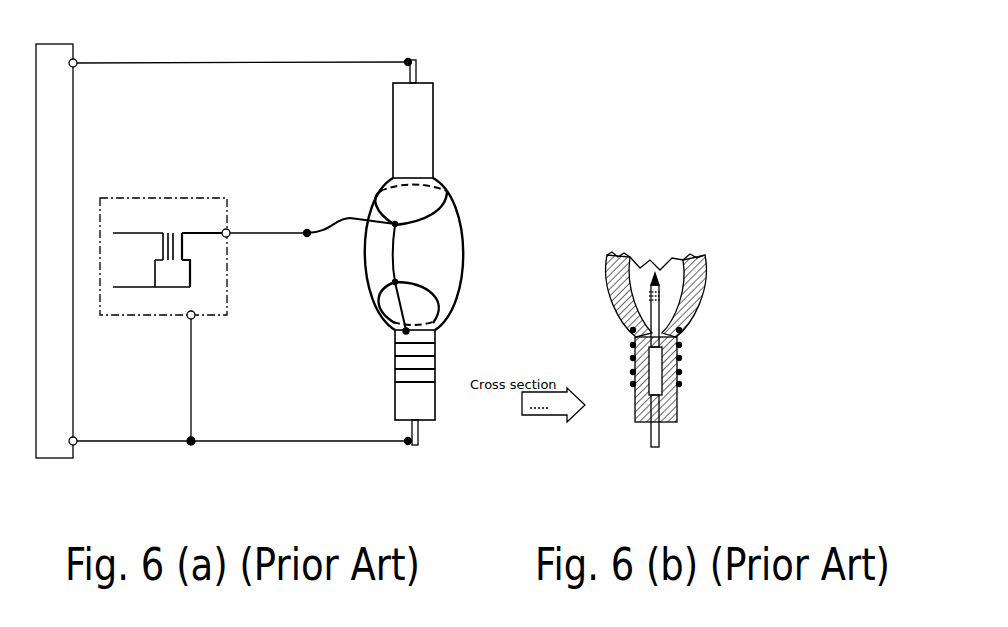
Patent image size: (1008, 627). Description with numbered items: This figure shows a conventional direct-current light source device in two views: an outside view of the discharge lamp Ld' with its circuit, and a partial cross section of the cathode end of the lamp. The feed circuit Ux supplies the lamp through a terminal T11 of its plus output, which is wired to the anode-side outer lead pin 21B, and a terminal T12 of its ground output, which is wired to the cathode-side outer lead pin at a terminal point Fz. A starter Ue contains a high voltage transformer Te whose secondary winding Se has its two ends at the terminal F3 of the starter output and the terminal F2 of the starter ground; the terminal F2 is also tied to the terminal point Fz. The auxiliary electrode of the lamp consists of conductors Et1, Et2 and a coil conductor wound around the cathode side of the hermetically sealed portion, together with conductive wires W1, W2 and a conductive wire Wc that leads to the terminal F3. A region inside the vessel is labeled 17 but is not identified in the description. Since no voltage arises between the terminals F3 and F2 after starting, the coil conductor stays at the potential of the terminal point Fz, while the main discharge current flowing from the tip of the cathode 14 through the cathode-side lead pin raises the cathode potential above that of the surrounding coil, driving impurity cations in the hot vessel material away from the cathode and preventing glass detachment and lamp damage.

The feed circuit Ux is at (54, 251).
The terminal of the plus output of the feed circuit T11 is at (77, 67).
The terminal of the ground output of the feed circuit T12 is at (77, 437).
The starter Ue is at (198, 198).
The high voltage transformer Te is at (170, 228).
The secondary winding Se is at (185, 240).
The terminal of the output of the starter F3 is at (229, 230).
The terminal of the ground of the starter F2 is at (194, 320).
The terminal point Fz is at (194, 437).
The conductive wire Wc is at (345, 220).
The conductive wire W1 is at (392, 252).
The conductive wire W2 is at (398, 305).
The discharge lamp Ld' is at (450, 206).
The conductor Et2 is at (425, 218).
The discharge space 17 is at (453, 243).
The conductor Et1 is at (428, 287).
The outer lead pin 21B is at (418, 69).
The cathode 14 is at (660, 282).